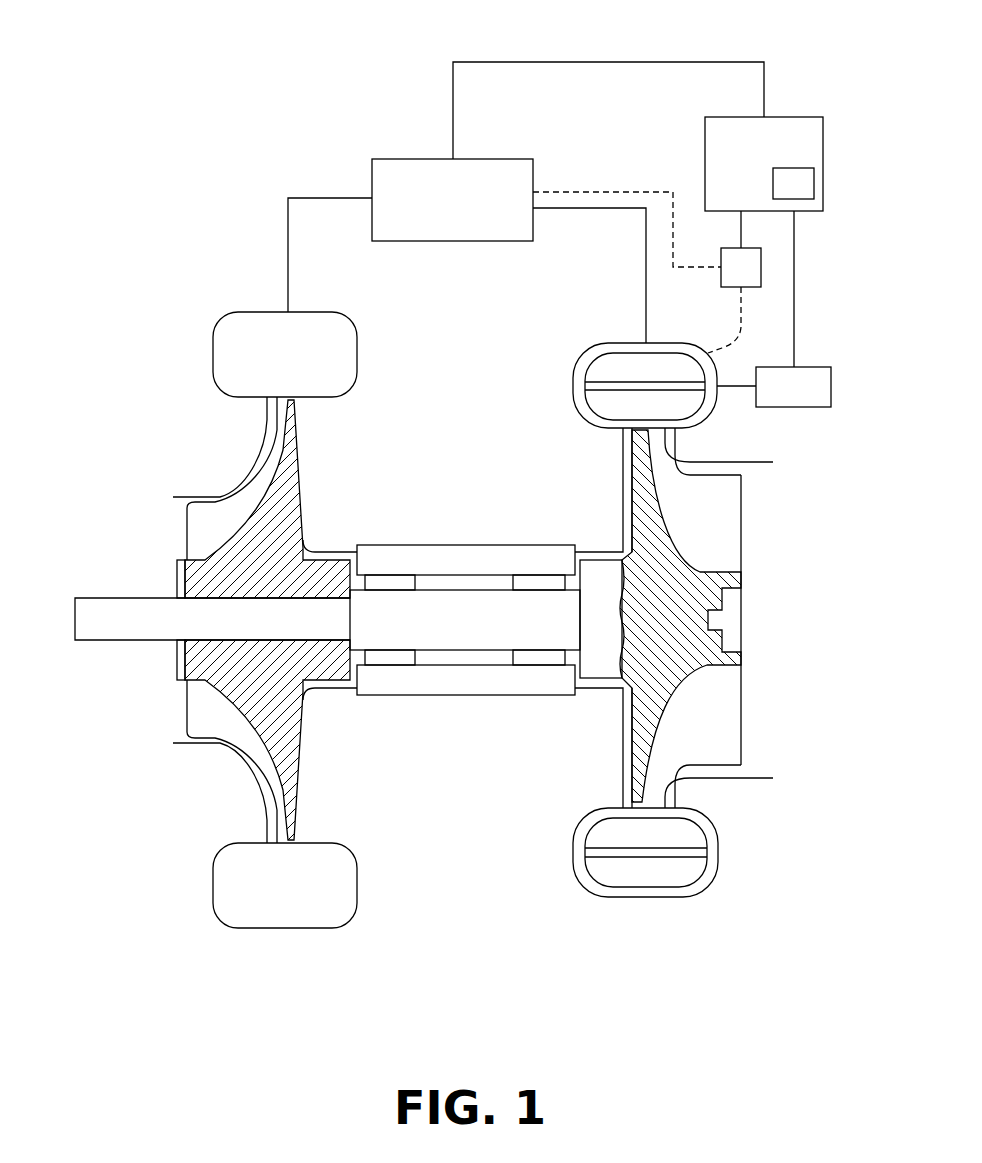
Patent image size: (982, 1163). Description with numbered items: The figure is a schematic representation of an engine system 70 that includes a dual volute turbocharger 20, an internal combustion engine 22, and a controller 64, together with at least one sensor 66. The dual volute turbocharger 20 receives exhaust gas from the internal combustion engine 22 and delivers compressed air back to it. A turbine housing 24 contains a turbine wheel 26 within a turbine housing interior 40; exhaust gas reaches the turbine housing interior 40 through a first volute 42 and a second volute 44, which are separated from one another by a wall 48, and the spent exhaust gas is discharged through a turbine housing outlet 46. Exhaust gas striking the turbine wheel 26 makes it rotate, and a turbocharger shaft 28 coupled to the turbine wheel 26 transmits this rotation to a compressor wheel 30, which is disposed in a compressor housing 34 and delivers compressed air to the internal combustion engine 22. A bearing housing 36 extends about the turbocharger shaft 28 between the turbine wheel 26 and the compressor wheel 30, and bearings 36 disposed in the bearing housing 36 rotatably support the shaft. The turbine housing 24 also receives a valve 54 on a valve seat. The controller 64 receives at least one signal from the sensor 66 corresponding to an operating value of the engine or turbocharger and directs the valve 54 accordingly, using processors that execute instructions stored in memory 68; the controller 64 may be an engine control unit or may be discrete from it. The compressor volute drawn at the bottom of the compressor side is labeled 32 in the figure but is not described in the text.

The dual volute turbocharger 20 is at (152, 272).
The internal combustion engine 22 is at (437, 214).
The turbine housing 24 is at (670, 897).
The turbine wheel 26 is at (693, 657).
The turbocharger shaft 28 is at (437, 613).
The compressor wheel 30 is at (203, 572).
The compressor volute 32 is at (270, 930).
The compressor housing 34 is at (457, 545).
The bearing housing 36 is at (393, 655).
The turbine housing interior 40 is at (693, 783).
The first volute 42 is at (637, 870).
The second volute 44 is at (617, 830).
The turbine housing outlet 46 is at (762, 527).
The wall 48 is at (681, 387).
The valve 54 is at (781, 401).
The controller 64 is at (752, 164).
The sensor 66 is at (728, 282).
The memory 68 is at (781, 197).
The engine system 70 is at (172, 105).